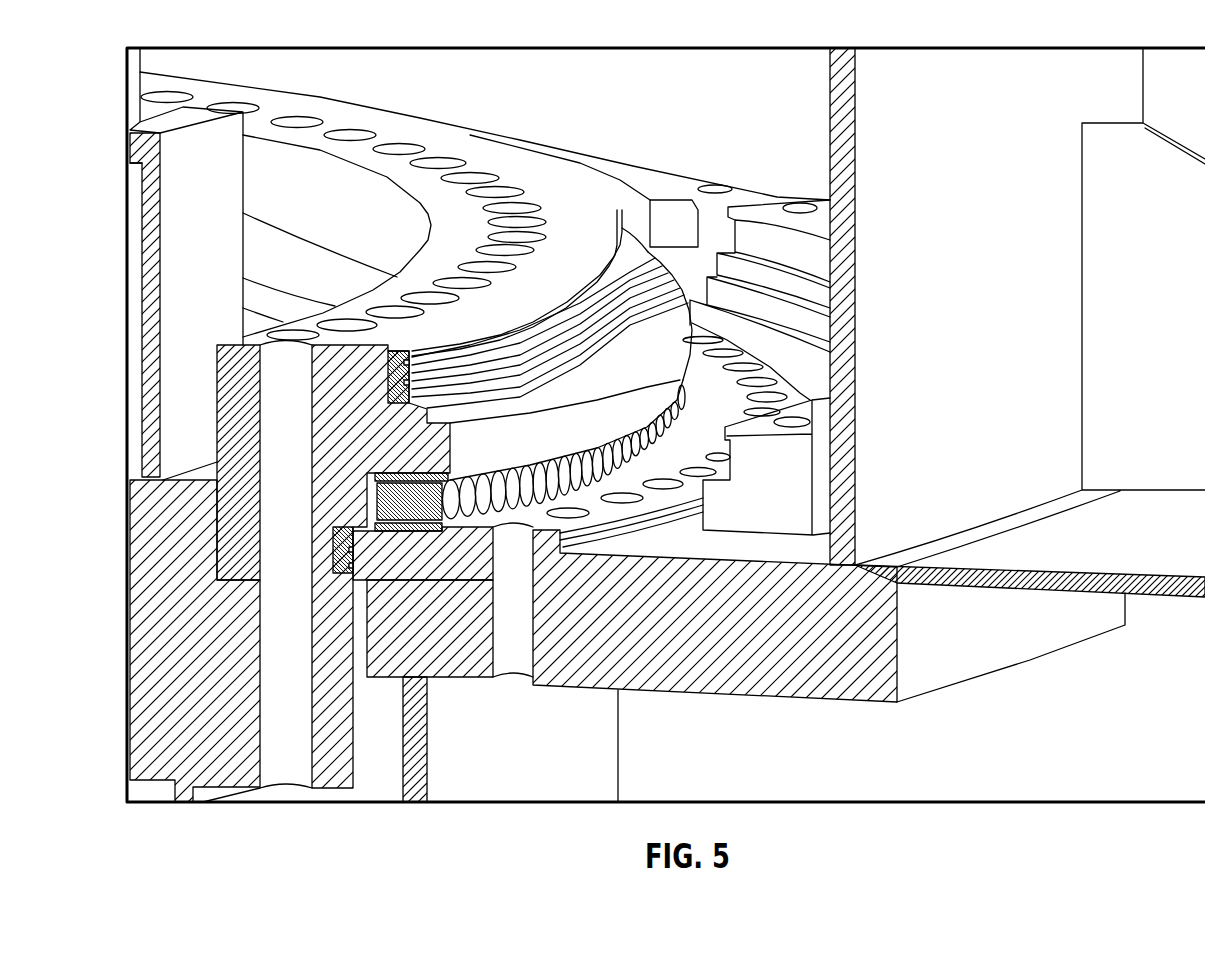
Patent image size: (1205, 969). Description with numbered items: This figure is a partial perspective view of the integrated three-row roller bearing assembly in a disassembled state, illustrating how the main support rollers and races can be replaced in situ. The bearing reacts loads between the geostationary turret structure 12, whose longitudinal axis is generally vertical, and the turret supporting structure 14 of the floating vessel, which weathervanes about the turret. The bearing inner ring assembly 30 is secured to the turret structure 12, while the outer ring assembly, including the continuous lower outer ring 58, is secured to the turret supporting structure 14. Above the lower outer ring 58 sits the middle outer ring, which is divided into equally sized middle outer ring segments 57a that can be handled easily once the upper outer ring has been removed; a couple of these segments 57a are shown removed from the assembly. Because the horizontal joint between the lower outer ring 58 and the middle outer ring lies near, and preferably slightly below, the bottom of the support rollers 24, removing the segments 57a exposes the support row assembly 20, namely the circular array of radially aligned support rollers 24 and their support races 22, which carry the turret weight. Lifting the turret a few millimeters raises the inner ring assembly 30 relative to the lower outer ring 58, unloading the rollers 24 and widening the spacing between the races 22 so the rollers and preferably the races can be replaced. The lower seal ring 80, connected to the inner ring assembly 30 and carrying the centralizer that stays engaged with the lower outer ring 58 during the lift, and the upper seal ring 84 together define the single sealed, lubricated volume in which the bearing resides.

The turret structure 12 is at (147, 683).
The turret supporting structure 14 is at (810, 762).
The support row assembly 20 is at (368, 493).
The support races 22 is at (420, 550).
The support rollers 24 is at (540, 483).
The bearing inner ring assembly 30 is at (208, 423).
The middle outer ring segments 57a is at (670, 217).
The lower outer ring 58 is at (465, 530).
The lower seal ring 80 is at (324, 549).
The upper seal ring 84 is at (380, 369).